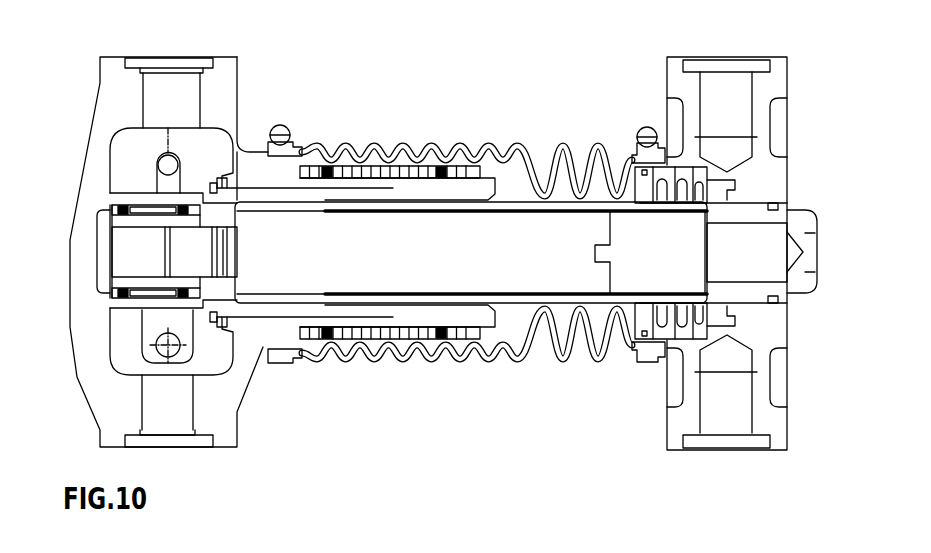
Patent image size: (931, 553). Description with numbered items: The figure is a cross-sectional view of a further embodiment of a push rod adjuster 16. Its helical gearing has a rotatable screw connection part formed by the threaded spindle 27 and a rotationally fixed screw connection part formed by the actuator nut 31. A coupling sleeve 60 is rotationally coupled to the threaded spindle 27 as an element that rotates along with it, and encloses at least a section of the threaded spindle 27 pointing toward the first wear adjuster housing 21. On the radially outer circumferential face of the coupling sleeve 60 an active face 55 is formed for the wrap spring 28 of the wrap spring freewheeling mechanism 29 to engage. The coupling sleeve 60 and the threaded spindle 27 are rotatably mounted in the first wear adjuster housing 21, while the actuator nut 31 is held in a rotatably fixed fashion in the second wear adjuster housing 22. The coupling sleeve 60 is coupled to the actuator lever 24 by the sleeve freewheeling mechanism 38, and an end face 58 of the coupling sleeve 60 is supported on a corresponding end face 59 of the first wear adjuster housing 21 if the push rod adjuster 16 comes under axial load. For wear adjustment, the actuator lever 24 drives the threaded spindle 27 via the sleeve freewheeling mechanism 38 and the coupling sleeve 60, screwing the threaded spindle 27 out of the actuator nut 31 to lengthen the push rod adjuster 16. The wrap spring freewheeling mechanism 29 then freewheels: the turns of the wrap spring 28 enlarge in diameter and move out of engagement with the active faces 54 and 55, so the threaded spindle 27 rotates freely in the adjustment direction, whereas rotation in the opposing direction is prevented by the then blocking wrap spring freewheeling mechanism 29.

The push rod adjuster 16 is at (493, 110).
The first wear adjuster housing 21 is at (233, 410).
The second wear adjuster housing 22 is at (777, 330).
The actuator lever 24 is at (157, 325).
The threaded spindle 27 is at (527, 268).
The wrap spring 28 is at (390, 170).
The wrap spring freewheeling mechanism 29 is at (360, 130).
The actuator nut 31 is at (567, 205).
The sleeve freewheeling mechanism 38 is at (142, 210).
The active face 54 is at (330, 170).
The active face 55 is at (443, 170).
The end face of the coupling sleeve 58 is at (392, 318).
The end face of the first wear adjuster housing 59 is at (393, 178).
The coupling sleeve 60 is at (470, 318).